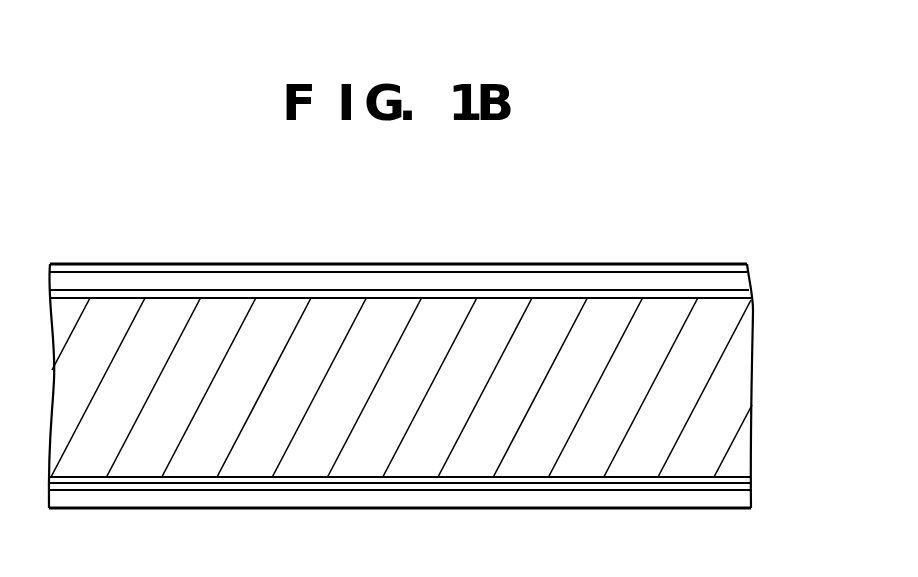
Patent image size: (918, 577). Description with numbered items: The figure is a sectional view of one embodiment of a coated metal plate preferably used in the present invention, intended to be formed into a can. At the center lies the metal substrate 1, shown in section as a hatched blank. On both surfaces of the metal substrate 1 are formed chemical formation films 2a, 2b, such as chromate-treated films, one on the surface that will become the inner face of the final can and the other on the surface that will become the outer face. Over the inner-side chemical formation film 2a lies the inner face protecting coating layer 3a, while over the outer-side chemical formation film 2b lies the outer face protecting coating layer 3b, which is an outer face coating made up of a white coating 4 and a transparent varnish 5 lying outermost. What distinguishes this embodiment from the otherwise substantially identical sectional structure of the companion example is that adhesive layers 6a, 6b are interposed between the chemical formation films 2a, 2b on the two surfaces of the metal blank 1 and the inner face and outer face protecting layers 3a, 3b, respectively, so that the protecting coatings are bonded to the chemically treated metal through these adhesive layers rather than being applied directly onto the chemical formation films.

The metal substrate 1 is at (742, 401).
The chemical formation film 2a is at (612, 479).
The chemical formation film 2b is at (632, 297).
The inner face protecting coating layer 3a is at (496, 497).
The protecting coating layer 3b is at (512, 281).
The white coating 4 is at (398, 256).
The transparent varnish 5 is at (399, 264).
The adhesive layer 6a is at (325, 485).
The adhesive layer 6b is at (337, 289).